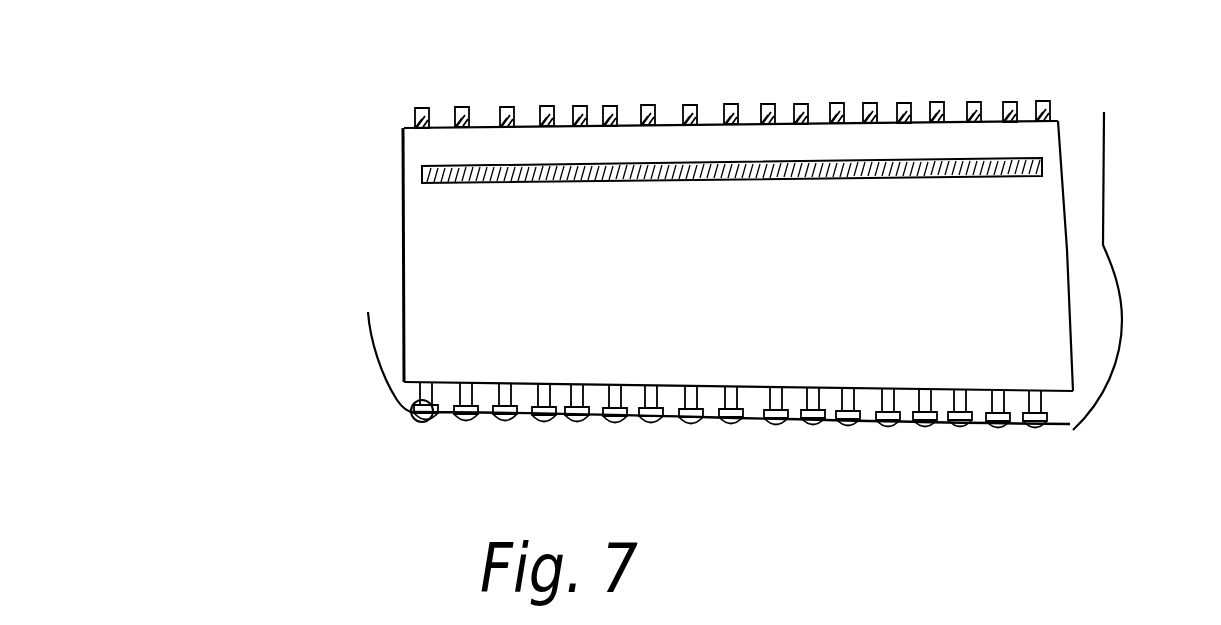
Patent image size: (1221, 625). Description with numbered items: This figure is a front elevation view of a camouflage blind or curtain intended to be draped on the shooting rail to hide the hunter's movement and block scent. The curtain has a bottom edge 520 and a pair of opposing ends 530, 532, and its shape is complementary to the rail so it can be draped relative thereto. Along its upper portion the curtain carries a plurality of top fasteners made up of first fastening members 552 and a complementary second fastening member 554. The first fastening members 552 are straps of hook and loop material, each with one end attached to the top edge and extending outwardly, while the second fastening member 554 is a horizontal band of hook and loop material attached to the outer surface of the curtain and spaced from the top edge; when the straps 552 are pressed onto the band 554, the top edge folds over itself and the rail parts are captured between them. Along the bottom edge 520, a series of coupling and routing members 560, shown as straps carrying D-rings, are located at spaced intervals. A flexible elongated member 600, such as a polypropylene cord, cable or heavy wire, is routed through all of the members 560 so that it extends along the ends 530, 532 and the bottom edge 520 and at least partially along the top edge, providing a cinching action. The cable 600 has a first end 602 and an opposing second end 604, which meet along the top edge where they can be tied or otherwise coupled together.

The bottom edge 520 is at (489, 384).
The opposing end 530 is at (400, 250).
The opposing end 532 is at (1068, 245).
The first fastening members 552 is at (610, 108).
The second fastening member 554 is at (575, 183).
The coupling and routing members 560 is at (418, 425).
The flexible elongated member 600 is at (367, 384).
The first end 602 is at (366, 310).
The second end 604 is at (1104, 115).